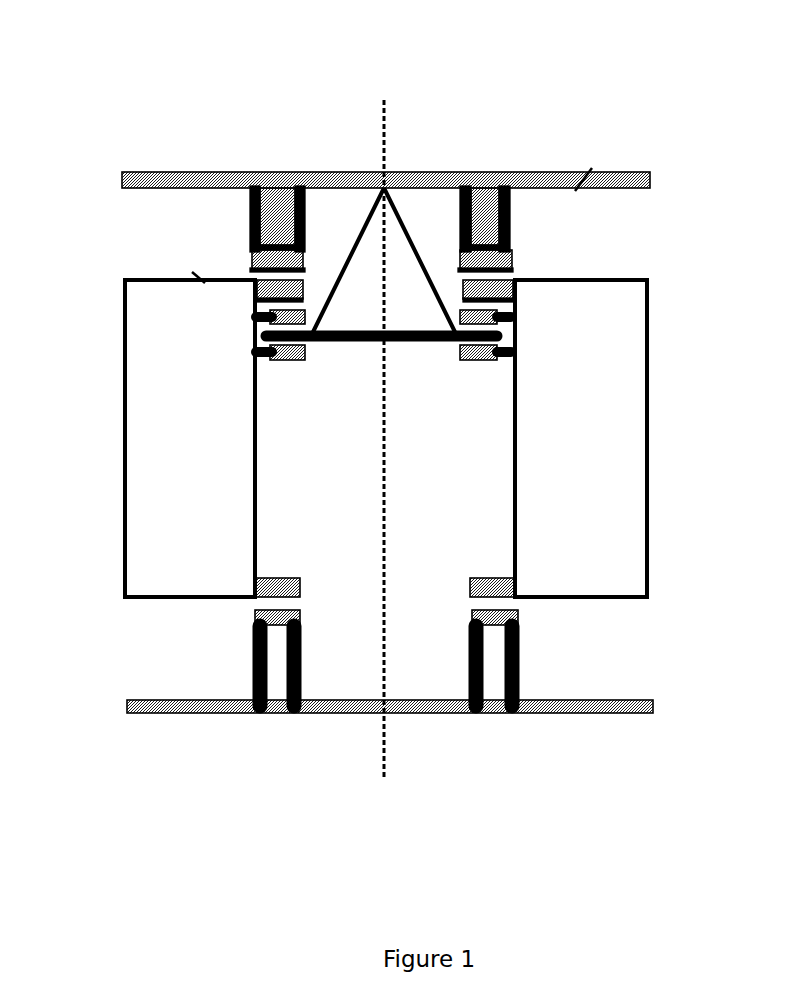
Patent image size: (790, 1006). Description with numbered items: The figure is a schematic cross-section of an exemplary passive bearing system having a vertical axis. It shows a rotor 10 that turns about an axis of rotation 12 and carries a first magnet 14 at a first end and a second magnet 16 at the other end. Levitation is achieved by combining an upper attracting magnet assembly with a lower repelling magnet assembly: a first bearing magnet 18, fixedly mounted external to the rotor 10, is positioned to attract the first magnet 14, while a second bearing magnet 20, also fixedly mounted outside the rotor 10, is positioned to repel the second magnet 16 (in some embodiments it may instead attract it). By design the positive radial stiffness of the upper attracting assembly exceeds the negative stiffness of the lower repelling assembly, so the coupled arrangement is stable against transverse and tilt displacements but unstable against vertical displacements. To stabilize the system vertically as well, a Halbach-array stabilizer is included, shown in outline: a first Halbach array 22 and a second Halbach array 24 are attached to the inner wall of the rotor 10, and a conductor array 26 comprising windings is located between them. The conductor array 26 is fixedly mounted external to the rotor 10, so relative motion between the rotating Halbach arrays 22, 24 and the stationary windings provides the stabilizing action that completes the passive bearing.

The rotor 10 is at (123, 348).
The axis of rotation 12 is at (383, 139).
The first magnet 14 is at (253, 288).
The second magnet 16 is at (270, 578).
The first bearing magnet 18 is at (250, 262).
The second bearing magnet 20 is at (255, 612).
The first Halbach array 22 is at (253, 308).
The second Halbach array 24 is at (281, 362).
The conductor array 26 is at (500, 335).